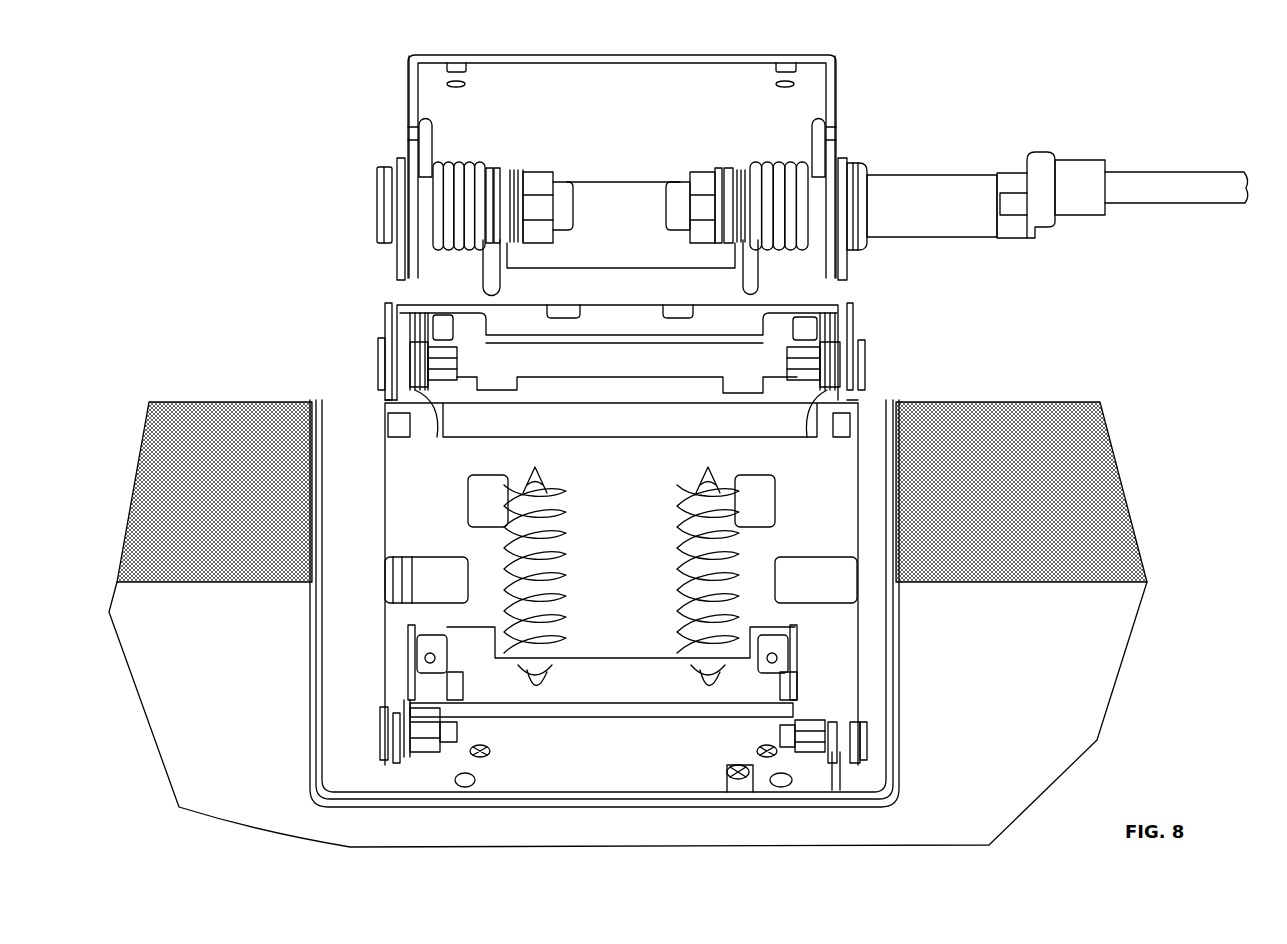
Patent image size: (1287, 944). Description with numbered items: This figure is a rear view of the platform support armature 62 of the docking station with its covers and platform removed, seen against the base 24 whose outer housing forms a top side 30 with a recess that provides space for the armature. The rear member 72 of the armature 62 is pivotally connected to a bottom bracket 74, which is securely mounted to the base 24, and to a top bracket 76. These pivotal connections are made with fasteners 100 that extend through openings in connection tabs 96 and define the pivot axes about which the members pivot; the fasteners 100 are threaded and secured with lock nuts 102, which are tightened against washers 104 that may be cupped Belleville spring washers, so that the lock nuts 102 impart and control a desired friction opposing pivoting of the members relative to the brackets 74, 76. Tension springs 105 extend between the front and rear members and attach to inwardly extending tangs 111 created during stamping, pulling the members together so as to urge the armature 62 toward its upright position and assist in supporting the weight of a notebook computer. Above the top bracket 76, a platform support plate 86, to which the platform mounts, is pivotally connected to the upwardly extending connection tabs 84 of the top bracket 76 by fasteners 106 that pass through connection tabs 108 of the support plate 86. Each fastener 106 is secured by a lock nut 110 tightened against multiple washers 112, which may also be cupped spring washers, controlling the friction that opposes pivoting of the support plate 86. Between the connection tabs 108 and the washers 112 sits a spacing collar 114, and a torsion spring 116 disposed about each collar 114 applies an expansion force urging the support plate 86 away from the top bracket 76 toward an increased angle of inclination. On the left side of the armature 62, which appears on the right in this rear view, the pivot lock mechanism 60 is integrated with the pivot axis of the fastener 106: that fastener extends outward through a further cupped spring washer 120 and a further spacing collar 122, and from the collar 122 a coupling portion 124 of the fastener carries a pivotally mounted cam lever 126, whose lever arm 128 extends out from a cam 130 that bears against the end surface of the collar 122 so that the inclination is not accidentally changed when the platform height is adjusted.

The base 24 is at (1060, 400).
The top side 30 is at (1085, 684).
The pivot lock mechanism 60 is at (1079, 120).
The platform support armature 62 is at (252, 95).
The rear member 72 is at (635, 437).
The bottom bracket 74 is at (632, 714).
The top bracket 76 is at (848, 293).
The connection tabs 84 is at (397, 256).
The platform support plate 86 is at (404, 58).
The connection tabs 96 is at (388, 397).
The fasteners 100 is at (385, 312).
The lock nuts 102 is at (443, 330).
The washers 104 is at (843, 817).
The tension springs 105 is at (570, 565).
The fasteners 106 is at (378, 205).
The connection tabs 108 is at (408, 143).
The lock nuts 110 is at (540, 178).
The tangs 111 is at (532, 476).
The washers 112 is at (505, 168).
The spacing collar 114 is at (425, 225).
The torsion spring 116 is at (462, 160).
The cupped spring washer 120 is at (870, 175).
The spacing collar 122 is at (918, 185).
The coupling portion 124 is at (1005, 205).
The cam lever 126 is at (1222, 165).
The lever arm 128 is at (1135, 180).
The cam 130 is at (1032, 160).